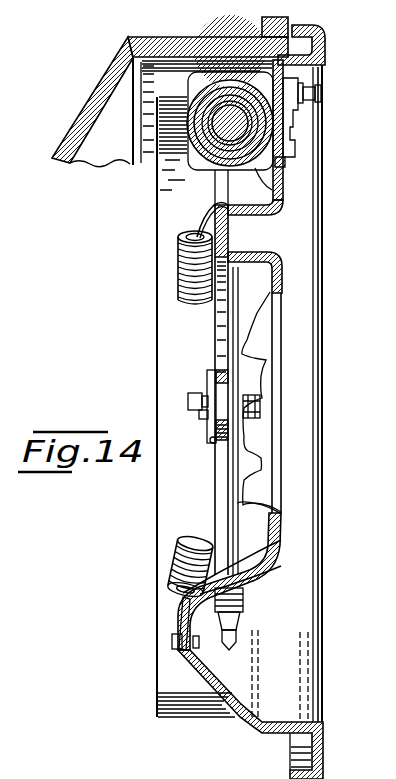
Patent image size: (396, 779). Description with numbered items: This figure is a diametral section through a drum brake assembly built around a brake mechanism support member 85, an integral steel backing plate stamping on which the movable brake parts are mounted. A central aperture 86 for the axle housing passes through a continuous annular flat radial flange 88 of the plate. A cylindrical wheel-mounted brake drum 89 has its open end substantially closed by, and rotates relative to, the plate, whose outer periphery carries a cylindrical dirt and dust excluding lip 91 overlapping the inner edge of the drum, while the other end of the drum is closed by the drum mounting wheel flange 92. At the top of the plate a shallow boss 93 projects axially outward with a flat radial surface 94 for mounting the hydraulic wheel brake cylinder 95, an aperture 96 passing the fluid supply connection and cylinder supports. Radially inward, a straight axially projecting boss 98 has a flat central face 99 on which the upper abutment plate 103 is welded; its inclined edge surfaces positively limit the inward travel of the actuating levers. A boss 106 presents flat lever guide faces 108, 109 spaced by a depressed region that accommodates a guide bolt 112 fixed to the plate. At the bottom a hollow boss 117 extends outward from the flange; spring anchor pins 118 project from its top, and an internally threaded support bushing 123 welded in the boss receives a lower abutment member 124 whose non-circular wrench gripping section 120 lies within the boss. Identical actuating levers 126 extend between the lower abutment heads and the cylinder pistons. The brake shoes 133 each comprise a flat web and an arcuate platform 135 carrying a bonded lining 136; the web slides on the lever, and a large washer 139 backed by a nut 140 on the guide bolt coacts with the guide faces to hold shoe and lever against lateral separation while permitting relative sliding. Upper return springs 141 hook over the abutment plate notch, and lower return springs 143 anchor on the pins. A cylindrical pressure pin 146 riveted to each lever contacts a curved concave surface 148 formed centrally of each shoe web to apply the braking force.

The brake mechanism support member 85 is at (324, 218).
The central aperture 86 is at (273, 421).
The annular flat radial flange 88 is at (275, 534).
The brake drum 89 is at (183, 42).
The dirt and dust excluding lip 91 is at (326, 40).
The drum mounting wheel flange 92 is at (55, 153).
The shallow boss 93 is at (281, 171).
The flat radial surface 94 is at (275, 203).
The hydraulic wheel brake cylinder 95 is at (208, 89).
The aperture 96 is at (284, 159).
The axially outwardly projecting boss 98 is at (257, 265).
The flat central face 99 is at (229, 240).
The upper abutment plate 103 is at (206, 216).
The boss 106 is at (263, 390).
The flat lever guide face 108 is at (251, 352).
The flat lever guide face 109 is at (257, 460).
The guide bolt 112 is at (190, 400).
The hollow boss 117 is at (184, 673).
The spring anchor pin 118 is at (172, 641).
The wrench gripping section 120 is at (233, 648).
The support bushing 123 is at (248, 602).
The lower abutment member 124 is at (238, 616).
The actuating lever 126 is at (239, 503).
The brake shoe 133 is at (216, 507).
The arcuate platform 135 is at (158, 590).
The bonded lining 136 is at (176, 722).
The washer 139 is at (209, 441).
The nut 140 is at (205, 421).
The upper return spring 141 is at (178, 269).
The lower return spring 143 is at (182, 551).
The pressure pin 146 is at (213, 392).
The concave surface 148 is at (223, 434).